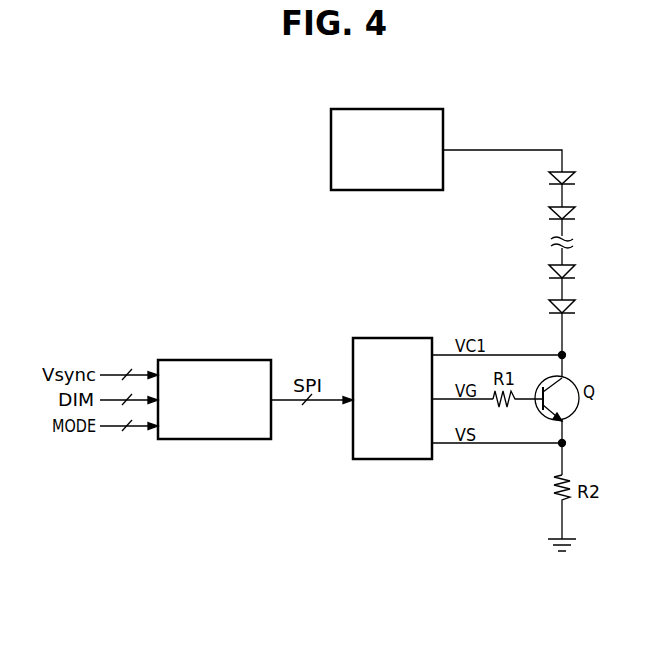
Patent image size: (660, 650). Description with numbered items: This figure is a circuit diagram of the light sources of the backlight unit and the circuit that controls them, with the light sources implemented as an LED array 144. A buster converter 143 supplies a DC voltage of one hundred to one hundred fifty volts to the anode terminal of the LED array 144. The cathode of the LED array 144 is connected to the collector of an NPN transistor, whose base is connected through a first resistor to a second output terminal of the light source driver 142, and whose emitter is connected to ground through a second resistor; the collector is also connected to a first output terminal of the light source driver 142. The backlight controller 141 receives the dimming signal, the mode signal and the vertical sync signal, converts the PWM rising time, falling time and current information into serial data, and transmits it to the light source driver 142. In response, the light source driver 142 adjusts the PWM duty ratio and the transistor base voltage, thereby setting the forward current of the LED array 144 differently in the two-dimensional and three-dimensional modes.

The backlight controller 141 is at (231, 410).
The light source driver 142 is at (410, 408).
The buster converter 143 is at (405, 159).
The LED array 144 is at (585, 173).